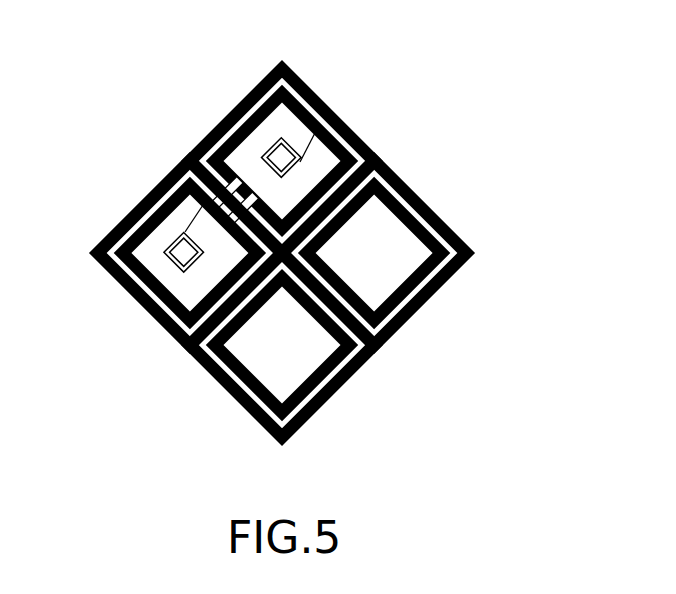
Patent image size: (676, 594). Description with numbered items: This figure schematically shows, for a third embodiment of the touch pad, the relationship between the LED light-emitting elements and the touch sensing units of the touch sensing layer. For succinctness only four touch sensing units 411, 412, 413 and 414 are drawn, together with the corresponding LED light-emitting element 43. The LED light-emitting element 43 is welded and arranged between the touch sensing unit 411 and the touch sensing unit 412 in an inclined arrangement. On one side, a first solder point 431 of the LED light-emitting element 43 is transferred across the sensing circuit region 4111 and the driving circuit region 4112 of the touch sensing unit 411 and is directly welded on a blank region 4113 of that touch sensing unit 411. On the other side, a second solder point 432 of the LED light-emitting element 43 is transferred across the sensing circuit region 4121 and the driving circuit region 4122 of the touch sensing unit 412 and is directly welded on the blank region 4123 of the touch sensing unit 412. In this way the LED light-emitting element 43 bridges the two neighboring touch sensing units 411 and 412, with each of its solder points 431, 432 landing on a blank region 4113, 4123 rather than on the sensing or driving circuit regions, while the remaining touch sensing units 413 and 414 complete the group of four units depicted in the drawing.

The touch sensing unit 411 is at (157, 172).
The sensing circuit region 4111 is at (112, 276).
The driving circuit region 4112 is at (158, 302).
The blank region 4113 is at (148, 252).
The touch sensing unit 412 is at (262, 64).
The sensing circuit region 4121 is at (302, 79).
The driving circuit region 4122 is at (345, 121).
The blank region 4123 is at (262, 97).
The touch sensing unit 413 is at (228, 400).
The touch sensing unit 414 is at (433, 202).
The LED light-emitting element 43 is at (279, 126).
The first solder point 431 is at (178, 235).
The second solder point 432 is at (305, 107).